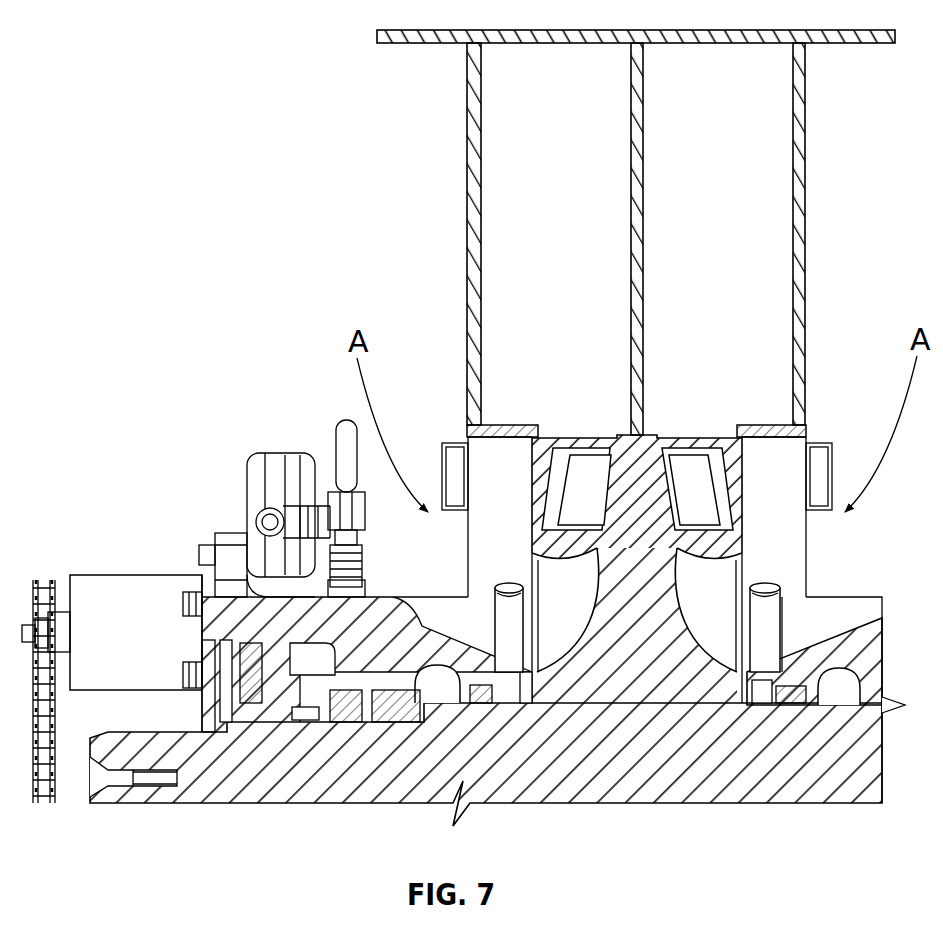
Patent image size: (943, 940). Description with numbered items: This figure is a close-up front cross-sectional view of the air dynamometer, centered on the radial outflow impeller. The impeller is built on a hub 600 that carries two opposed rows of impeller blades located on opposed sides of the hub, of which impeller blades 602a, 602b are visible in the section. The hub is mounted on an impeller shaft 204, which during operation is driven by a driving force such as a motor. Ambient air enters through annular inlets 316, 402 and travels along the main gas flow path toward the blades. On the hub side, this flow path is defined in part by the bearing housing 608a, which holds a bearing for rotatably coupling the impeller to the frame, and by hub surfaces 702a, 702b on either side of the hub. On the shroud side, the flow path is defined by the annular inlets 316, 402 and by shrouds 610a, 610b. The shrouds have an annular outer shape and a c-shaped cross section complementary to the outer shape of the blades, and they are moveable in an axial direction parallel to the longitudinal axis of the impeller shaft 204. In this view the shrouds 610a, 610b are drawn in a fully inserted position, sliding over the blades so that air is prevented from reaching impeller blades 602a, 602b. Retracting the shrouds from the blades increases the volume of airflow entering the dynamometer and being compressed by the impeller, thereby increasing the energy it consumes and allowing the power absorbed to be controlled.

The impeller shaft 204 is at (250, 788).
The annular inlet 316 is at (510, 426).
The annular inlet 402 is at (775, 425).
The hub 600 is at (657, 609).
The impeller blade 602a is at (575, 498).
The impeller blade 602b is at (702, 507).
The bearing housing 608a is at (408, 659).
The shroud 610a is at (577, 440).
The shroud 610b is at (678, 440).
The hub surface 702a is at (573, 648).
The hub surface 702b is at (717, 670).